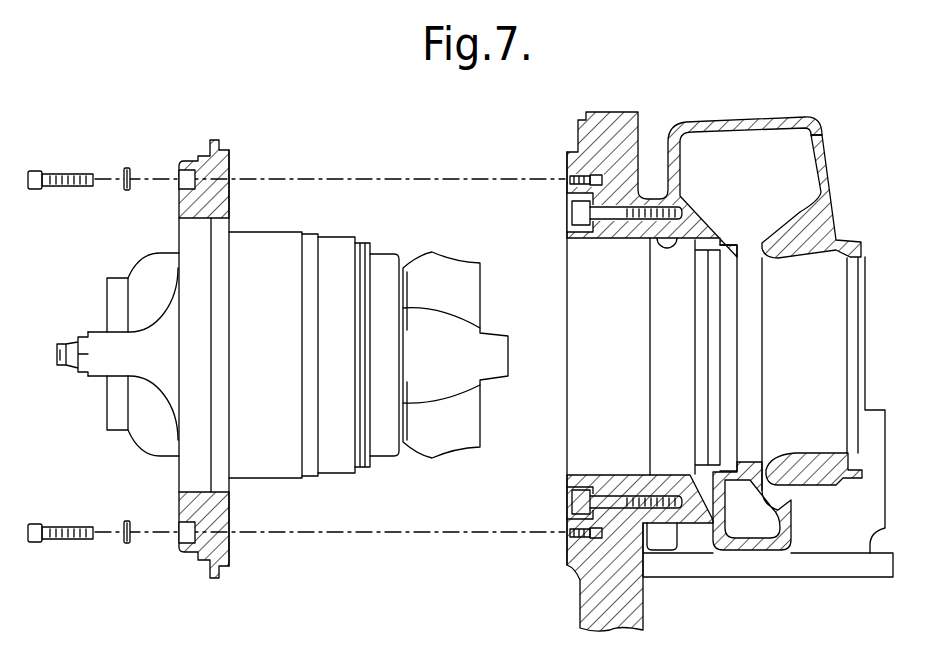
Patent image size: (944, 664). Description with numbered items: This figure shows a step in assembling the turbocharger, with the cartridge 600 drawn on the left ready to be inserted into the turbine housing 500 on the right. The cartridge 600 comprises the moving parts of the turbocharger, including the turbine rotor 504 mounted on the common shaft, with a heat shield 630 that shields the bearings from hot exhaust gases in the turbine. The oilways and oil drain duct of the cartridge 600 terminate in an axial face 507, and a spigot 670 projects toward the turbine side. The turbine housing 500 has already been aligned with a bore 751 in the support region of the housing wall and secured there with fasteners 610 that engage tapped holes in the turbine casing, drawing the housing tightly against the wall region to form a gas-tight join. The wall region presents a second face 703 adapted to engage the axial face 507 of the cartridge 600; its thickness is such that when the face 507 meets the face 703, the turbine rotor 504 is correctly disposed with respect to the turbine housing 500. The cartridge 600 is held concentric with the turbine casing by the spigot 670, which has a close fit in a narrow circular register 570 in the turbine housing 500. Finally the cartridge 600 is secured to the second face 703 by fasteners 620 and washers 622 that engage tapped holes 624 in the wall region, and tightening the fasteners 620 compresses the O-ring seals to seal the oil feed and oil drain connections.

The turbine housing 500 is at (806, 124).
The turbine rotor 504 is at (463, 263).
The axial face 507 is at (230, 514).
The narrow circular register 570 is at (690, 236).
The cartridge 600 is at (380, 170).
The fasteners 610 is at (576, 500).
The fasteners 620 is at (70, 172).
The washers 622 is at (128, 167).
The tapped holes 624 is at (568, 178).
The heat shield 630 is at (381, 254).
The spigot 670 is at (311, 232).
The second face 703 is at (570, 560).
The bore 751 is at (624, 347).